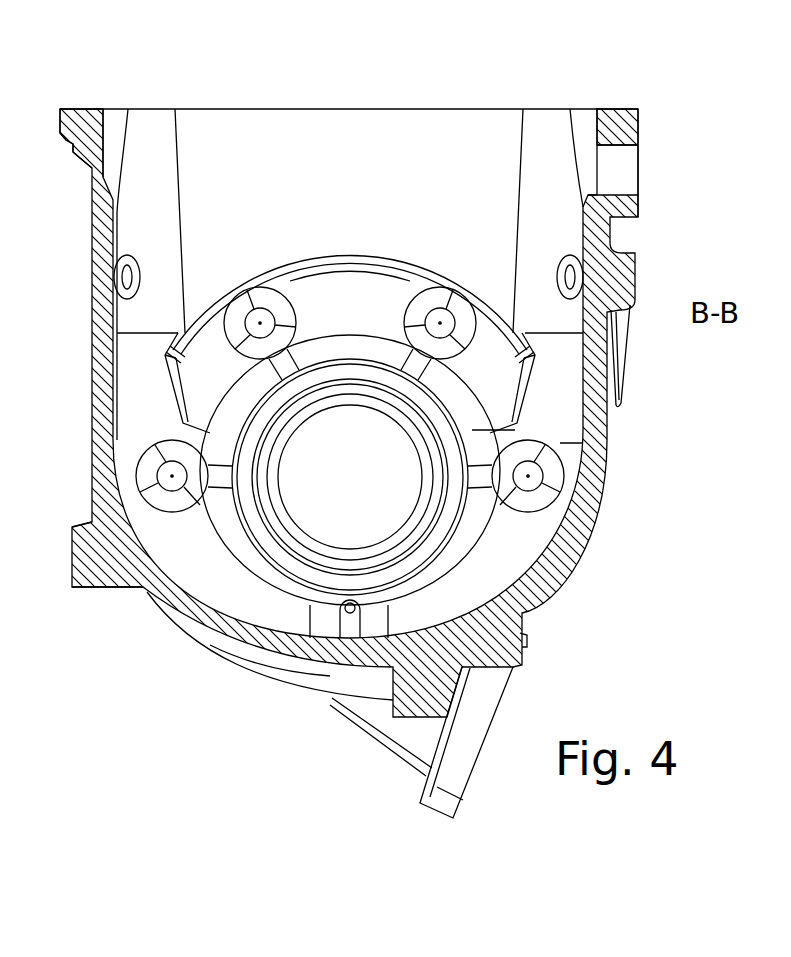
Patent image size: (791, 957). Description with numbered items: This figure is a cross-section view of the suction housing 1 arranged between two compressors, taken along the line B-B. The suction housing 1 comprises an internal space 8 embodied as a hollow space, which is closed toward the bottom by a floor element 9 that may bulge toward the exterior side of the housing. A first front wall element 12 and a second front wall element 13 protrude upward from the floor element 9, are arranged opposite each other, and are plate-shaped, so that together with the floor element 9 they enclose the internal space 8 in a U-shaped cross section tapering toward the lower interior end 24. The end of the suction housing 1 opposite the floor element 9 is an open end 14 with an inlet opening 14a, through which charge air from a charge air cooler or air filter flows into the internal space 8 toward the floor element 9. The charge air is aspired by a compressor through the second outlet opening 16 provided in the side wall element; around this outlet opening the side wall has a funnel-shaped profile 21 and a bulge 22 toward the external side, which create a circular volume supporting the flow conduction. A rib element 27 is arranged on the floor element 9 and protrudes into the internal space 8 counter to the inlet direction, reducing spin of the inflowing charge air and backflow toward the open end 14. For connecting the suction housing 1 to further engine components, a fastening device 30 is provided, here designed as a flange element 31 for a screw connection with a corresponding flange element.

The suction housing 1 is at (268, 98).
The internal space 8 is at (468, 135).
The floor element 9 is at (212, 627).
The first front wall element 12 is at (93, 302).
The second front wall element 13 is at (598, 432).
The open end 14 is at (382, 107).
The inlet opening 14a is at (217, 125).
The second outlet opening 16 is at (369, 493).
The funnel-shaped profile 21 is at (430, 503).
The bulge 22 is at (407, 530).
The lower interior end 24 is at (356, 614).
The rib element 27 is at (345, 609).
The fastening device 30 is at (632, 121).
The flange element 31 is at (82, 117).